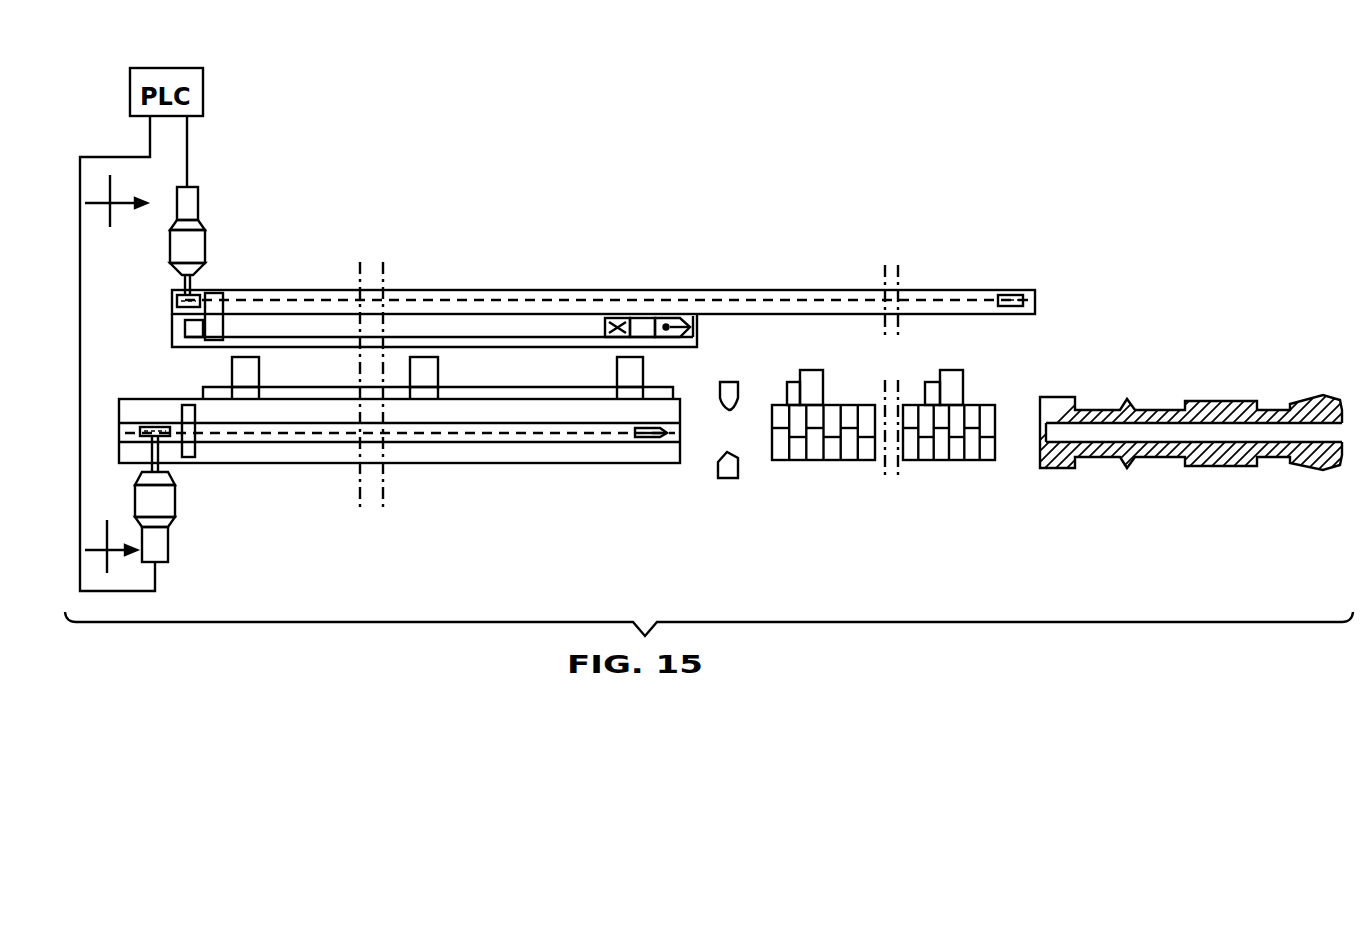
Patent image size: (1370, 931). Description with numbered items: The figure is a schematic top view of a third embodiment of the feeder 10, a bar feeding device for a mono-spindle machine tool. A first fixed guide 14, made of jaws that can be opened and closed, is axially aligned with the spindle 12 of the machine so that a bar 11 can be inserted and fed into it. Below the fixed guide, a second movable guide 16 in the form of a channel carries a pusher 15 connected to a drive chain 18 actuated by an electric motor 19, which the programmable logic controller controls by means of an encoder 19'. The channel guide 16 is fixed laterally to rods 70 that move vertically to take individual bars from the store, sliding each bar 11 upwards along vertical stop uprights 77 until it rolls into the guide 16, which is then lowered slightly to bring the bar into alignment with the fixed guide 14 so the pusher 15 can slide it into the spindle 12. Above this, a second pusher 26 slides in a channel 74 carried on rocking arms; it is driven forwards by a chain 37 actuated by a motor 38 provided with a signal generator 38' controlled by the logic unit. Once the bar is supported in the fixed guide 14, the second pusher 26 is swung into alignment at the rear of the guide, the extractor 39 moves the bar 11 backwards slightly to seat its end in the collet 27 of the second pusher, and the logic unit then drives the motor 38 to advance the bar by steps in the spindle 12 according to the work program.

The feeder 10 is at (760, 485).
The bar 11 is at (297, 394).
The spindle 12 is at (1215, 456).
The first fixed guide 14 is at (915, 458).
The pusher 15 is at (186, 405).
The second movable guide 16 is at (530, 452).
The drive chain 18 is at (292, 434).
The electric motor 19 is at (186, 481).
The encoder 19' is at (189, 569).
The second pusher 26 is at (469, 293).
The collet 27 is at (667, 326).
The chain 37 is at (818, 298).
The motor 38 is at (219, 249).
The signal generator 38' is at (225, 183).
The extractor 39 is at (722, 392).
The rods 70 is at (246, 372).
The channel 74 is at (700, 347).
The vertical stop uprights 77 is at (793, 392).